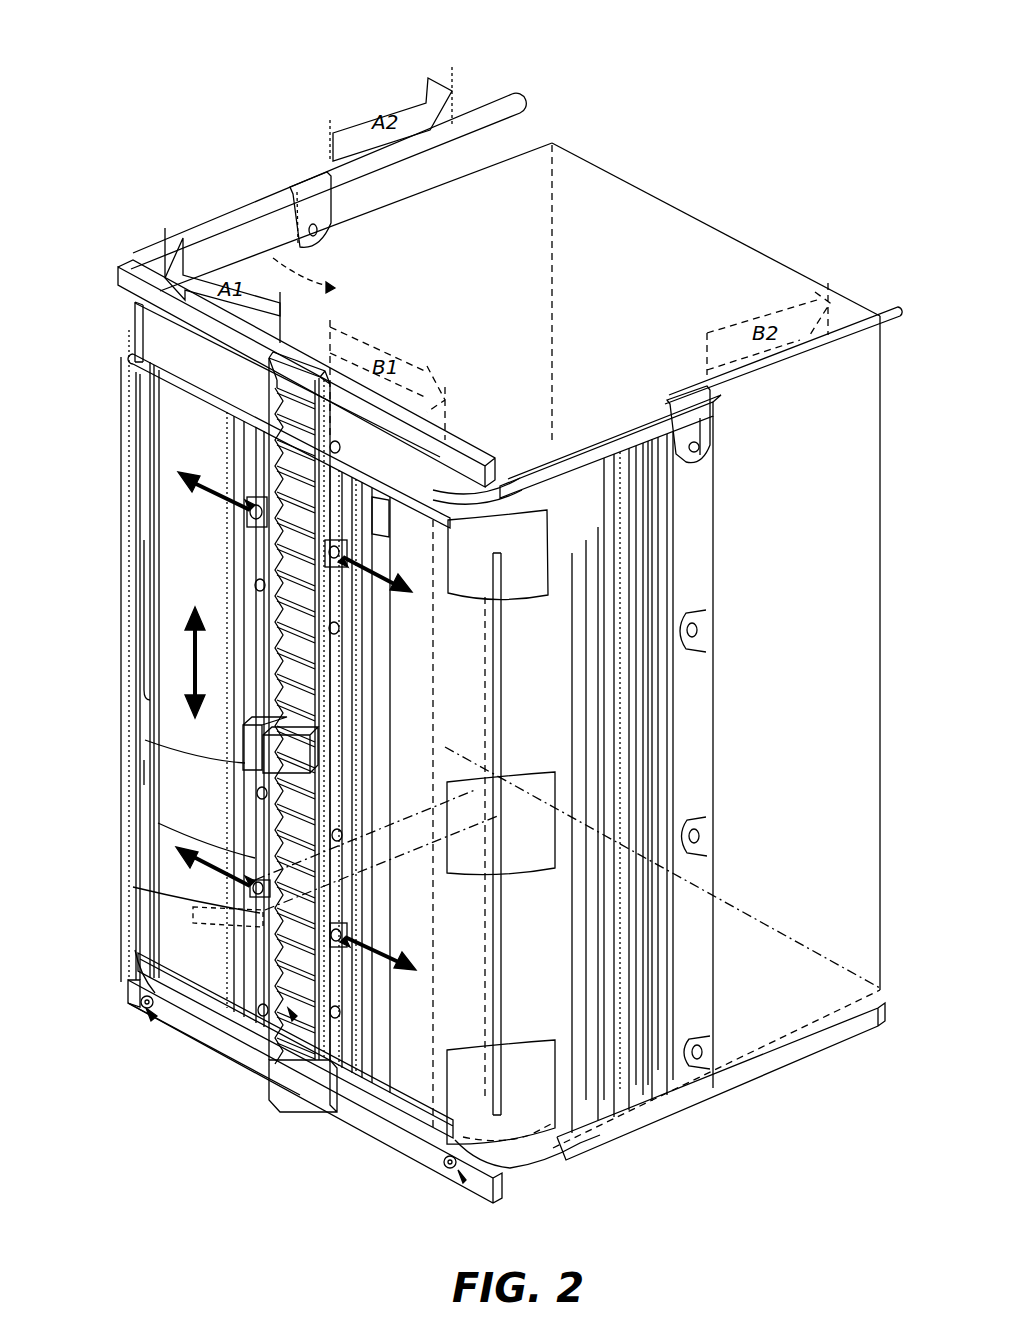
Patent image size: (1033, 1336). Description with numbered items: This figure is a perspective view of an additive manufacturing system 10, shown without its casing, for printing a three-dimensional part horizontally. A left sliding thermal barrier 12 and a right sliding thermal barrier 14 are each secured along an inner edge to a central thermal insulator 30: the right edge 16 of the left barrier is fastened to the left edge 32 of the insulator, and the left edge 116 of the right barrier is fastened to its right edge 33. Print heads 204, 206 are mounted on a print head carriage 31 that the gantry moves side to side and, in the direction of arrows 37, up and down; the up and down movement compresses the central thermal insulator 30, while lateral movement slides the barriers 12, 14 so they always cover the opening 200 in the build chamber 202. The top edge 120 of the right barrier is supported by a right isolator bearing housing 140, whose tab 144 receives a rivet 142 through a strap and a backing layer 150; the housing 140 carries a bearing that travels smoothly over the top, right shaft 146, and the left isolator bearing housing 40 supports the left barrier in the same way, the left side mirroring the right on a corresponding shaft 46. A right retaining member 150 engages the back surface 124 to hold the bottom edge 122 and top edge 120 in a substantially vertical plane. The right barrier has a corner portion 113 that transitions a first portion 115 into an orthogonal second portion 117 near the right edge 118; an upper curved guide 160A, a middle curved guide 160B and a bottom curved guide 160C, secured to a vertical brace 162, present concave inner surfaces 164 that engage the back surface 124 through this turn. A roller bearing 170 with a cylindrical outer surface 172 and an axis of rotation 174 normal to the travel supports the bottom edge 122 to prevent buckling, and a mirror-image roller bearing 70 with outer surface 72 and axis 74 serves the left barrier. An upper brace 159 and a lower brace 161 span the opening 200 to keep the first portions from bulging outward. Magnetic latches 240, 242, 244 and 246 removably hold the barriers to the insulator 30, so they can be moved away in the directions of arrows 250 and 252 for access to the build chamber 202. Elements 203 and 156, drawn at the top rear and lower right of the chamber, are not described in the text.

The additive manufacturing system 10 is at (256, 127).
The left sliding thermal barrier 12 is at (174, 603).
The right sliding thermal barrier 14 is at (627, 1048).
The right edge 16 is at (240, 913).
The central thermal insulator 30 is at (290, 1032).
The print head carriage 31 is at (270, 682).
The left edge 32 is at (278, 841).
The right edge 33 is at (320, 1037).
The arrows 37 is at (190, 656).
The left isolator bearing housing 40 is at (318, 185).
The rod 46 is at (511, 95).
The roller bearing 70 is at (155, 1020).
The cylindrical outer surface 72 is at (135, 1008).
The axis of rotation 74 is at (132, 1019).
The corner portion 113 is at (477, 984).
The first portion 115 is at (397, 808).
The left edge 116 is at (336, 996).
The second portion 117 is at (655, 798).
The right edge 118 is at (715, 727).
The top edge 120 is at (600, 442).
The bottom edge 122 is at (540, 1170).
The back surface 124 is at (655, 939).
The right isolator bearing housing 140 is at (687, 392).
The rivet 142 is at (702, 457).
The tab 144 is at (716, 427).
The top, right shaft 146 is at (882, 318).
The right retaining member 150 is at (698, 575).
The side bottom bar 156 is at (790, 1055).
The upper brace 159 is at (446, 508).
The upper curved guide 160A is at (527, 593).
The middle curved guide 160B is at (543, 802).
The bottom curved guide 160C is at (556, 1070).
The lower brace 161 is at (383, 1093).
The vertical brace 162 is at (500, 676).
The inner surfaces 164 is at (520, 517).
The roller bearing 170 is at (463, 1180).
The cylindrical outer surface 172 is at (444, 1161).
The axis of rotation 174 is at (430, 1175).
The opening 200 is at (122, 333).
The build chamber 202 is at (268, 256).
The top rear edge 203 is at (720, 232).
The print head 204 is at (247, 748).
The print head 206 is at (268, 763).
The latch 240 is at (250, 516).
The latch 242 is at (249, 888).
The latch 244 is at (338, 945).
The latch 246 is at (334, 565).
The arrows 250 is at (212, 490).
The arrows 252 is at (380, 580).